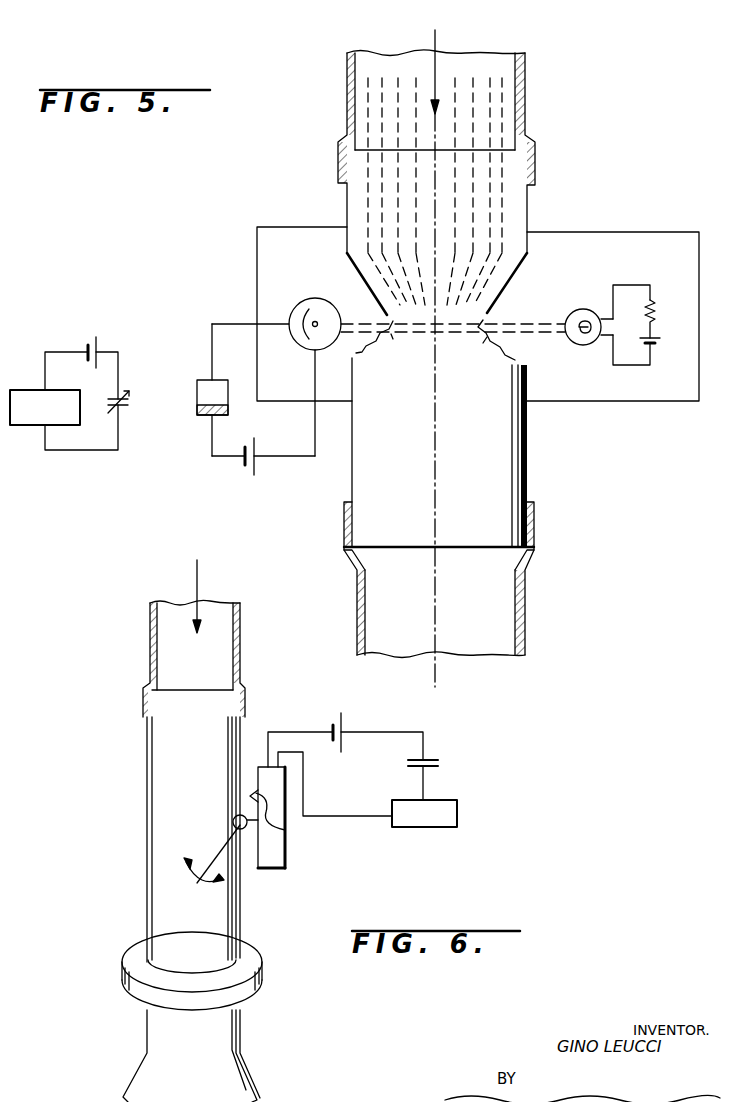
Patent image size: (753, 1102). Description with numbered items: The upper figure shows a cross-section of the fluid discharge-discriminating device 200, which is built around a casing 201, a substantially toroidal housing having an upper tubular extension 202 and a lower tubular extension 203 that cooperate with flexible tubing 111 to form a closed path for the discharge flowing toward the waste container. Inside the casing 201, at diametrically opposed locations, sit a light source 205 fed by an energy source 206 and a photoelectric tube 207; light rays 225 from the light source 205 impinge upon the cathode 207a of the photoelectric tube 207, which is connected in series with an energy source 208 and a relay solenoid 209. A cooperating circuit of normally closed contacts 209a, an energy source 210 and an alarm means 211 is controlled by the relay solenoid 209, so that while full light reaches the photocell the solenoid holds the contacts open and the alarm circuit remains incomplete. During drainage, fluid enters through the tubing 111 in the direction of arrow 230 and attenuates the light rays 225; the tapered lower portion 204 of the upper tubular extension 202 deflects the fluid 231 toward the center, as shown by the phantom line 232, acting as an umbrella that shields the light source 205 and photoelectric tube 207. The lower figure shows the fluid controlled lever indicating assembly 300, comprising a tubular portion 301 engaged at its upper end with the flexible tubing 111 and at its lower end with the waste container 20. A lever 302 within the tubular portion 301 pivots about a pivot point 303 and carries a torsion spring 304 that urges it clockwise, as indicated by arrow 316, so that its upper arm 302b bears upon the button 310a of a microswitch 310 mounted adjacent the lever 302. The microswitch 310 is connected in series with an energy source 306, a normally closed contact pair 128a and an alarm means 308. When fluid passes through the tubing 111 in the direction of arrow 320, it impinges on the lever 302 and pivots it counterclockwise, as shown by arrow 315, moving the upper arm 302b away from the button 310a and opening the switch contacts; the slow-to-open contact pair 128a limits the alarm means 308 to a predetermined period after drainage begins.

In FIG. 5, the fluid discharge-discriminating device 200 is at (170, 195).
In FIG. 5, the flexible tubing 111 is at (528, 103).
In FIG. 6, the flexible tubing 111 is at (243, 649).
In FIG. 5, the arrow 230 is at (440, 44).
In FIG. 5, the fluid 231 is at (357, 207).
In FIG. 5, the phantom line 232 is at (437, 495).
In FIG. 5, the tapered lower portion 204 is at (515, 284).
In FIG. 5, the light rays 225 is at (521, 324).
In FIG. 5, the upper tubular extension 202 is at (384, 356).
In FIG. 5, the lower tubular extension 203 is at (529, 465).
In FIG. 5, the casing 201 is at (615, 232).
In FIG. 5, the photoelectric tube 207 is at (315, 298).
In FIG. 5, the cathode 207a is at (304, 312).
In FIG. 5, the relay solenoid 209 is at (196, 388).
In FIG. 5, the energy source 208 is at (247, 478).
In FIG. 5, the alarm means 211 is at (30, 428).
In FIG. 5, the energy source 210 is at (100, 347).
In FIG. 5, the normally closed contacts 209a is at (124, 408).
In FIG. 5, the light source 205 is at (587, 301).
In FIG. 5, the energy source 206 is at (664, 340).
In FIG. 6, the arrow 320 is at (196, 583).
In FIG. 6, the fluid controlled lever indicating assembly 300 is at (141, 712).
In FIG. 6, the tubular portion 301 is at (147, 826).
In FIG. 6, the upper arm 302b is at (240, 752).
In FIG. 6, the lever 302 is at (228, 822).
In FIG. 6, the pivot point 303 is at (236, 811).
In FIG. 6, the torsion spring 304 is at (232, 817).
In FIG. 6, the arrow 315 is at (210, 862).
In FIG. 6, the arrow 316 is at (208, 888).
In FIG. 6, the microswitch 310 is at (287, 858).
In FIG. 6, the button 310a is at (287, 832).
In FIG. 6, the energy source 306 is at (346, 726).
In FIG. 6, the contact pair 128a is at (439, 765).
In FIG. 6, the alarm means 308 is at (424, 829).
In FIG. 6, the waste container 20 is at (147, 1018).